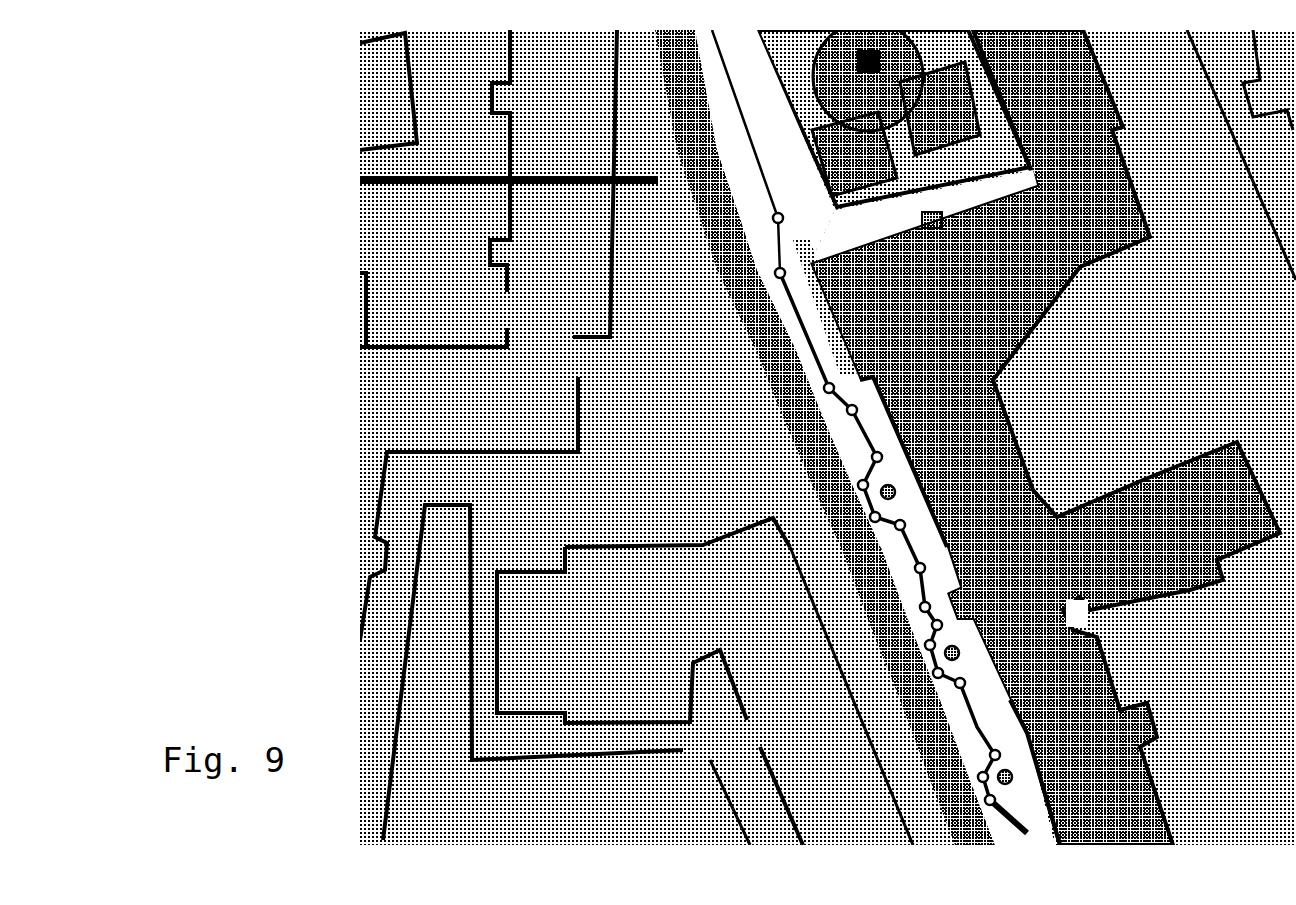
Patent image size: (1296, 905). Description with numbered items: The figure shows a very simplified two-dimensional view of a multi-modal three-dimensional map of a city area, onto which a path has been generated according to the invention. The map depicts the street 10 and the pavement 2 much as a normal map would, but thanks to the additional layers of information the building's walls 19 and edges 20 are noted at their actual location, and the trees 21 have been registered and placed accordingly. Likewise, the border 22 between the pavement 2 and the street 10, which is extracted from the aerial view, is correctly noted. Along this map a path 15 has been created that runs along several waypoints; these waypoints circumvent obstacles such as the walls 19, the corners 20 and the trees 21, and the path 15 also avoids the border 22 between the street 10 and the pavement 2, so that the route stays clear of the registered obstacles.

The pavement 2 is at (817, 323).
The street 10 is at (780, 275).
The path 15 is at (745, 155).
The walls 19 is at (1040, 777).
The edges 20 is at (873, 377).
The trees 21 is at (1009, 771).
The border 22 is at (848, 565).